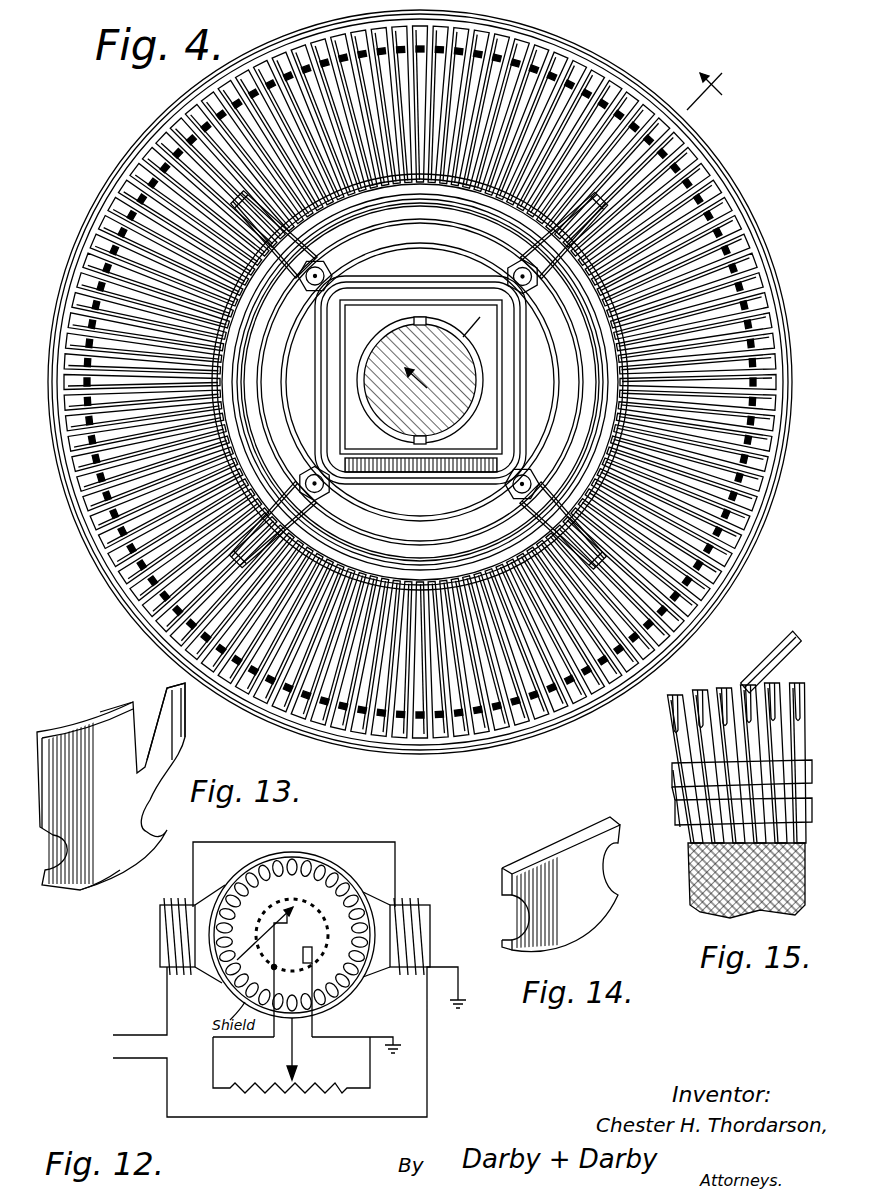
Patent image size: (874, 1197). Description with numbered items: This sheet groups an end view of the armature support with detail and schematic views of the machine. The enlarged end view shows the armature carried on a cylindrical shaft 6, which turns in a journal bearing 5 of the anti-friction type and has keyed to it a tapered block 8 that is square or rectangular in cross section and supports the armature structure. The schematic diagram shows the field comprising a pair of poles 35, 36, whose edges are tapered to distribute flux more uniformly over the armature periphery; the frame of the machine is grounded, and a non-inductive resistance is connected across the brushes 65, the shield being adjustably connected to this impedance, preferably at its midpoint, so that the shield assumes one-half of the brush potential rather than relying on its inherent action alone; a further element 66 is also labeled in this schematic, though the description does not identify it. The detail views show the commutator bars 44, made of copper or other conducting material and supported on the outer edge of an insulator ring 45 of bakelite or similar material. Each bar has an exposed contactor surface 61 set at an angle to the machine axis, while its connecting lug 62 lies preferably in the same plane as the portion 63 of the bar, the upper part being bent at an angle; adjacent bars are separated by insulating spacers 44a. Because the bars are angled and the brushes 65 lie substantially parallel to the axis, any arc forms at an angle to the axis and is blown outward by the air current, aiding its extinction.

In FIG. 4, the journal bearing 5 is at (569, 234).
In FIG. 4, the cylindrical shaft 6 is at (427, 336).
In FIG. 4, the tapered block 8 is at (363, 325).
In FIG. 12, the field pole 35 is at (206, 905).
In FIG. 12, the field pole 36 is at (378, 900).
In FIG. 13, the commutator bar 44 is at (129, 794).
In FIG. 14, the insulating spacer 44a is at (510, 862).
In FIG. 15, the insulating spacer 44a is at (673, 782).
In FIG. 15, the insulator ring 45 is at (690, 895).
In FIG. 13, the contactor surface 61 is at (118, 700).
In FIG. 15, the contactor surface 61 is at (737, 688).
In FIG. 13, the connecting lug 62 is at (186, 705).
In FIG. 15, the connecting lug 62 is at (710, 749).
In FIG. 13, the commutator bar portion 63 is at (108, 876).
In FIG. 12, the brush 65 is at (225, 985).
In FIG. 15, the brush 65 is at (777, 645).
In FIG. 12, the contact element 66 is at (312, 963).